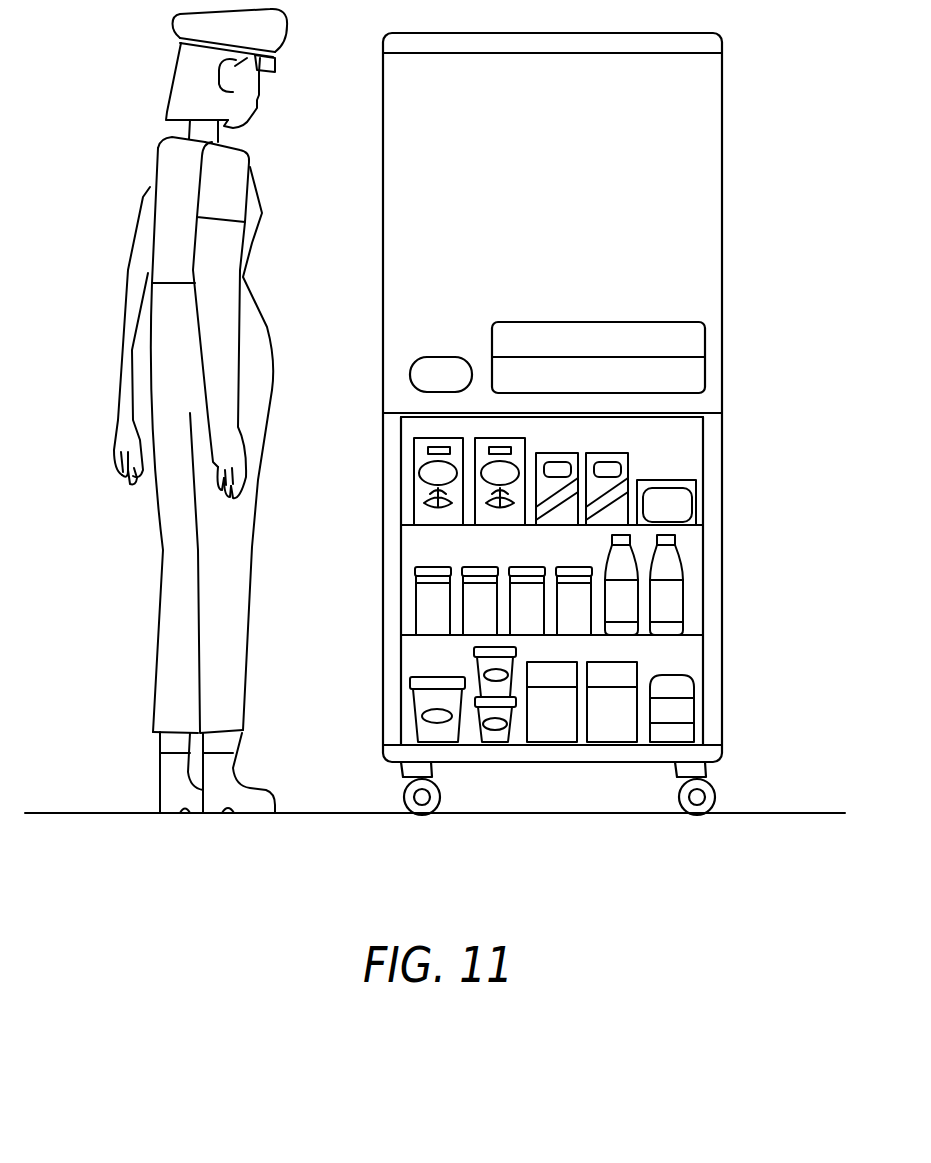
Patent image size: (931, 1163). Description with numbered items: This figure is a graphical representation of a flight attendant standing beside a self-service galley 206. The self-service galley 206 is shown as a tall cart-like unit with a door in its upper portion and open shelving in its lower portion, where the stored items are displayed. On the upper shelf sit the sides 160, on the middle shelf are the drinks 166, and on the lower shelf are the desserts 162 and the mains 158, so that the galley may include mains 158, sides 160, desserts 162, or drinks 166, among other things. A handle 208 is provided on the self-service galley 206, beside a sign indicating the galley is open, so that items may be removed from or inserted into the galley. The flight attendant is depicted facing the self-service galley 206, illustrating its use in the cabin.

The self-service galley 206 is at (722, 148).
The handle 208 is at (438, 357).
The sides 160 is at (414, 481).
The drinks 166 is at (683, 603).
The desserts 162 is at (414, 716).
The mains 158 is at (694, 717).